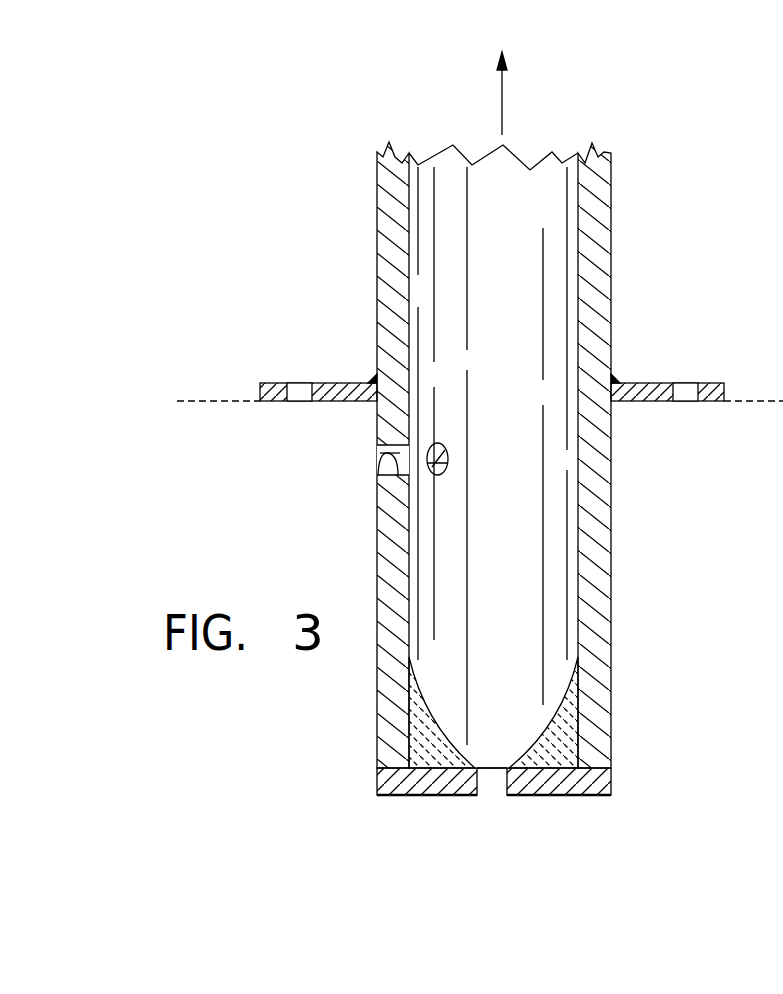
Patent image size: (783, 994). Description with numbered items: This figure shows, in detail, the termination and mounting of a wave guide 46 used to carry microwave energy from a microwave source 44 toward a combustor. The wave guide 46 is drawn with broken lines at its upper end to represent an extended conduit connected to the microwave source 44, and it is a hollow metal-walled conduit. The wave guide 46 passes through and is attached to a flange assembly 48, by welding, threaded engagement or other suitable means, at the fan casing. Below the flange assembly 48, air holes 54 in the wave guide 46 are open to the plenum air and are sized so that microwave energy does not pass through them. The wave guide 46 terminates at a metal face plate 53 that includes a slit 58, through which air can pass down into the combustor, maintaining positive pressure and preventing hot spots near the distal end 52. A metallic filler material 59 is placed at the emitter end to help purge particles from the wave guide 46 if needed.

The microwave source 44 is at (499, 77).
The wave guide 46 is at (613, 217).
The flange assembly 48 is at (717, 383).
The distal end 52 is at (505, 676).
The face plate 53 is at (558, 797).
The air holes 54 is at (377, 460).
The slit 58 is at (492, 787).
The metallic filler material 59 is at (557, 735).